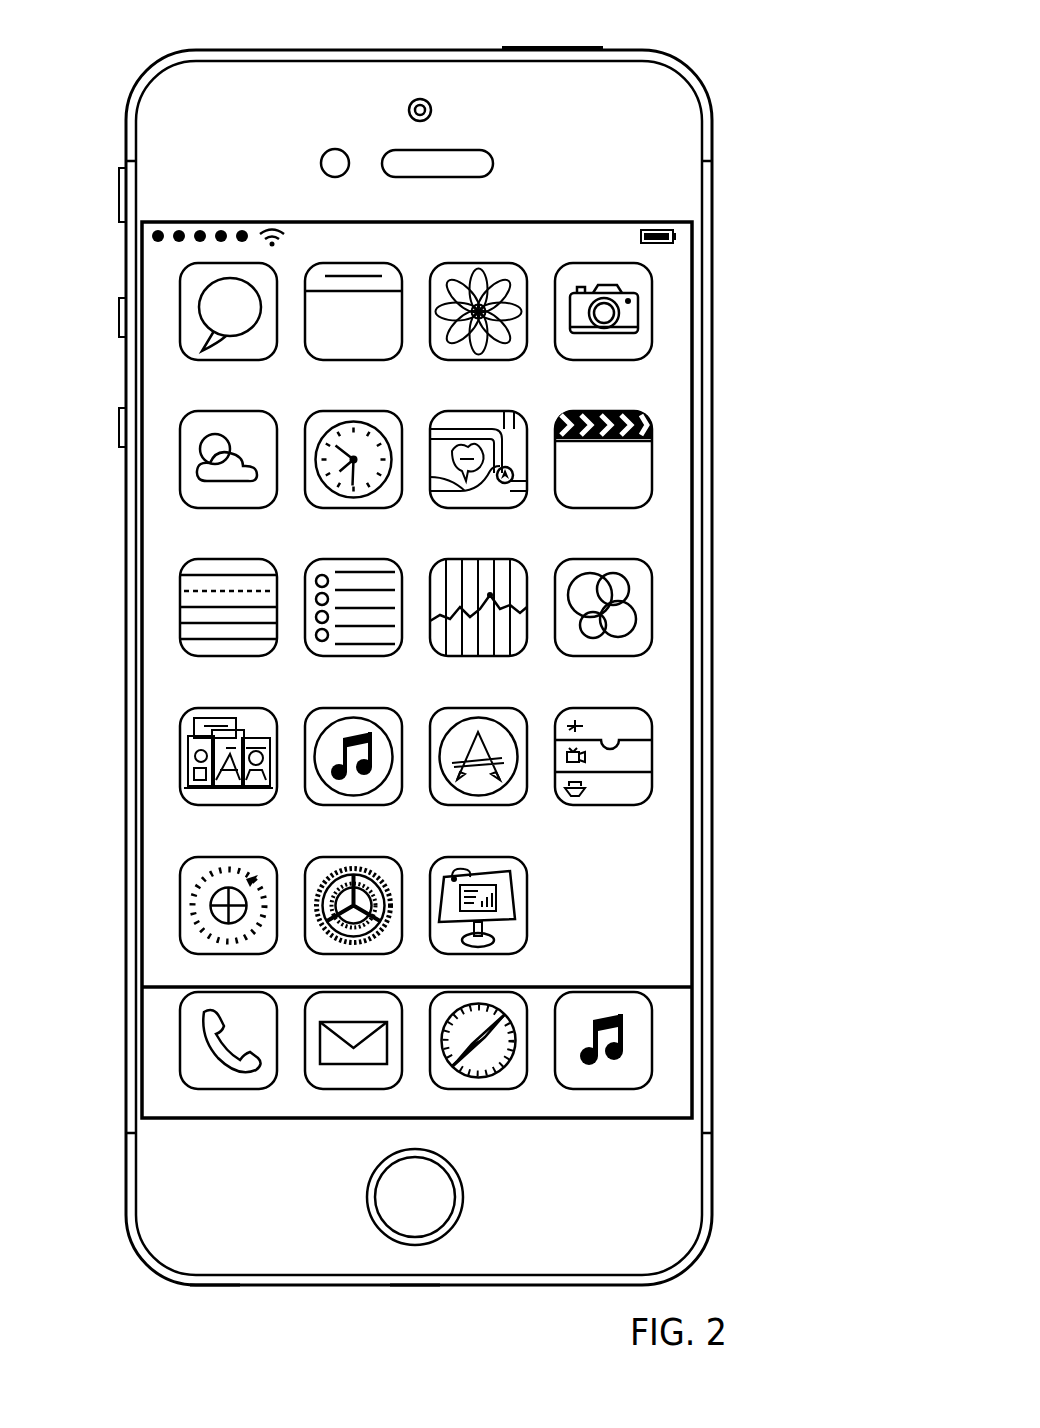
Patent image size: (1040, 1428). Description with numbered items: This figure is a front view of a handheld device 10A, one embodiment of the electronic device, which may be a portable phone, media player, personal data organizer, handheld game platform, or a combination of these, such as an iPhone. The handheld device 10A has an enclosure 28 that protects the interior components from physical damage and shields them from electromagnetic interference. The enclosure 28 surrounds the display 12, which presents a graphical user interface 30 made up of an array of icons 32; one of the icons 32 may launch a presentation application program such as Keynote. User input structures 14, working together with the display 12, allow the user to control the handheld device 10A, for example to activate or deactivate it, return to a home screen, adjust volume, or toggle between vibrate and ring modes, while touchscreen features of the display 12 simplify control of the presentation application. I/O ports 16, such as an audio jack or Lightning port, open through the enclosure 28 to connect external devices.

The handheld device 10A is at (128, 29).
The display 12 is at (693, 584).
The user input structures 14 is at (573, 50).
The I/O ports 16 is at (216, 1286).
The enclosure 28 is at (712, 168).
The graphical user interface 30 is at (669, 380).
The icons 32 is at (527, 904).